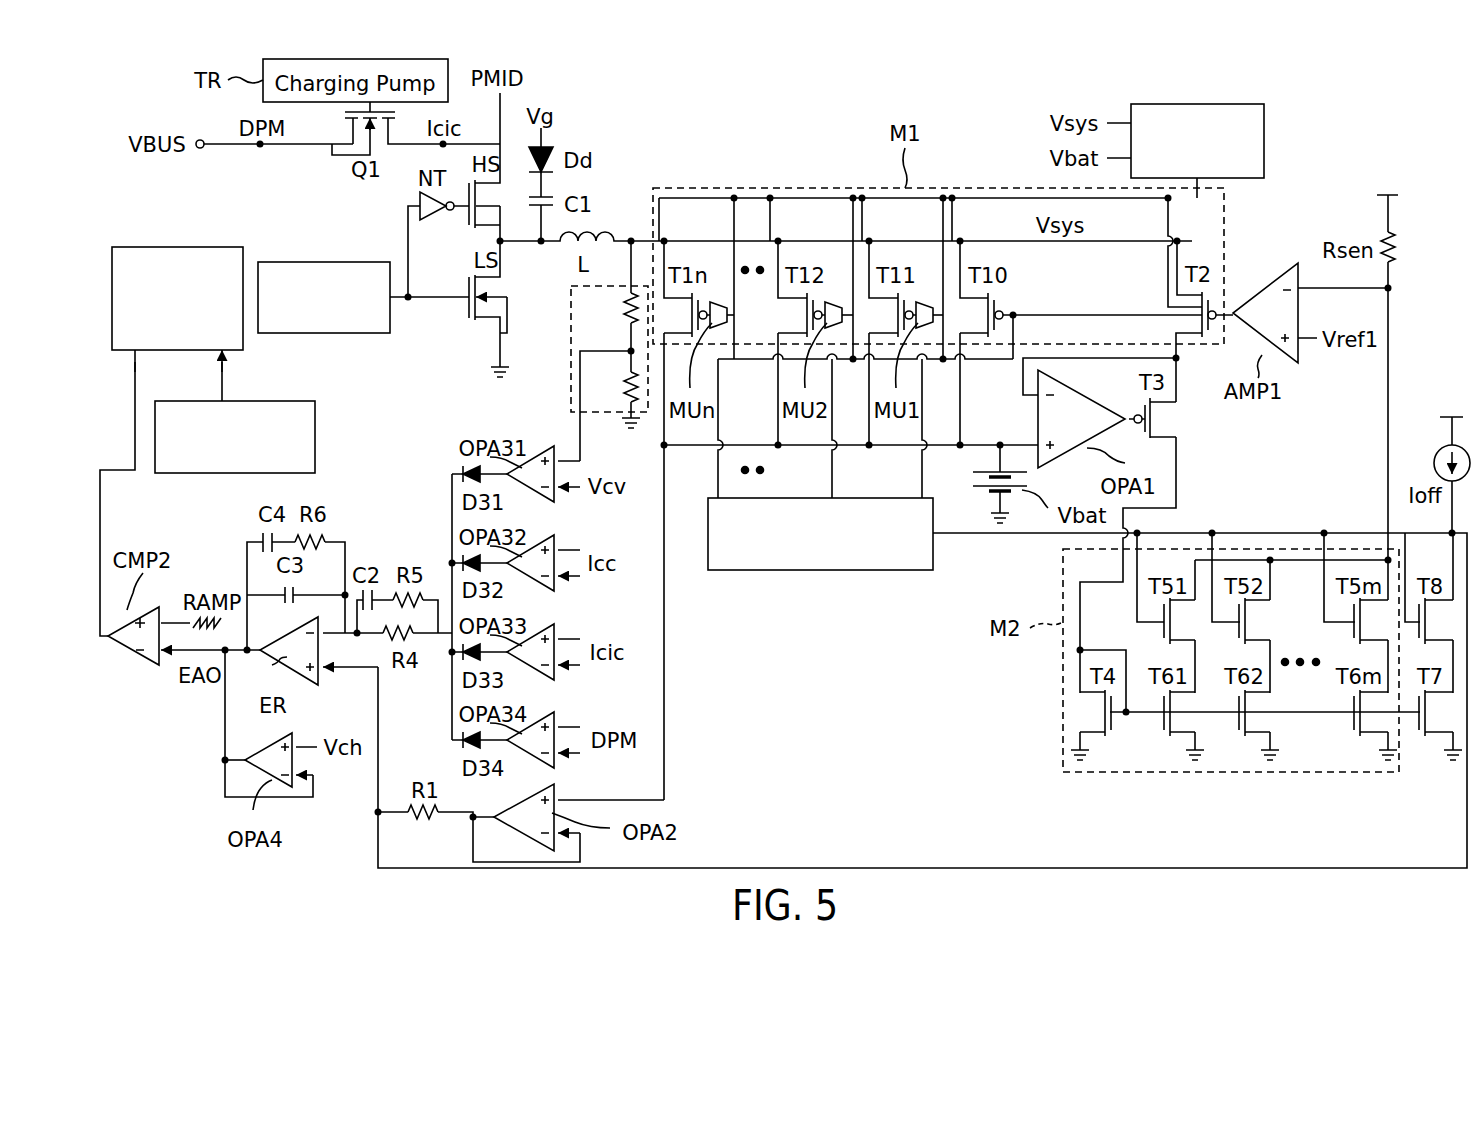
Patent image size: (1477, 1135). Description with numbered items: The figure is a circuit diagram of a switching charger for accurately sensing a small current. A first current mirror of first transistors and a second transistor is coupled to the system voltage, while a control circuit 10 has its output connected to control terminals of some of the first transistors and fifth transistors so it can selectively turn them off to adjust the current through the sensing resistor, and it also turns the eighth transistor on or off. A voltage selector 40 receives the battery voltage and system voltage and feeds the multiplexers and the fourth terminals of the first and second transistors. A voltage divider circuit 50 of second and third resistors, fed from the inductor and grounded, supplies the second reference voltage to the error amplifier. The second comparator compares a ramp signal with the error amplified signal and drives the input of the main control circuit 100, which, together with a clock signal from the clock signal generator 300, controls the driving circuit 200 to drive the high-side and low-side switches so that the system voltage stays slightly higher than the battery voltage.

The main control circuit 100 is at (178, 247).
The driving circuit 200 is at (323, 262).
The clock signal generator 300 is at (315, 437).
The control circuit 10 is at (813, 570).
The voltage selector 40 is at (1264, 138).
The voltage divider circuit 50 is at (571, 333).